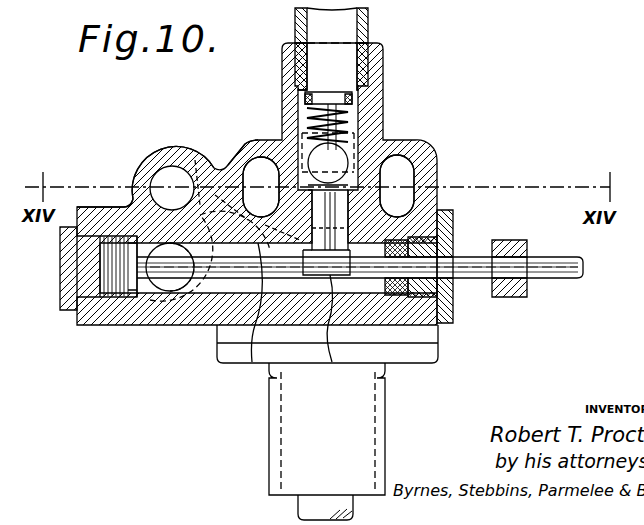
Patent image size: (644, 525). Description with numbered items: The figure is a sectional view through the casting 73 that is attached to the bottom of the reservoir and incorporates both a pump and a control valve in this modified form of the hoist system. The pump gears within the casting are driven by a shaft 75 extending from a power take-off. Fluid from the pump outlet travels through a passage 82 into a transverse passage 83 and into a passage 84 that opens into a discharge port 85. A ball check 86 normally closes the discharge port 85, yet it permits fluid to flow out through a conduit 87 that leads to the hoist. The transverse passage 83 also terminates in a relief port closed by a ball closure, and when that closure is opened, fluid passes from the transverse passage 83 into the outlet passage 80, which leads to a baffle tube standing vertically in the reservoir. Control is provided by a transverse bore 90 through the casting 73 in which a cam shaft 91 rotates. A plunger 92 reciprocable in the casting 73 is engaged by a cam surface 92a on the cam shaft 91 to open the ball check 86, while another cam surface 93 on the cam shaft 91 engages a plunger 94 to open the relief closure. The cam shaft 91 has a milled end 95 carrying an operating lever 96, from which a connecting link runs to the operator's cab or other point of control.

The casting 73 is at (432, 337).
The shaft 75 is at (318, 507).
The outlet passage 80 is at (166, 156).
The passage 82 is at (260, 157).
The transverse passage 83 is at (222, 158).
The passage 84 is at (422, 192).
The discharge port 85 is at (360, 156).
The ball check 86 is at (368, 116).
The conduit 87 is at (368, 17).
The transverse bore 90 is at (428, 216).
The cam shaft 91 is at (252, 343).
The plunger 92 is at (314, 232).
The cam surface 92a is at (332, 343).
The cam surface 93 is at (130, 204).
The plunger 94 is at (122, 322).
The milled end 95 is at (545, 257).
The operating lever 96 is at (509, 238).